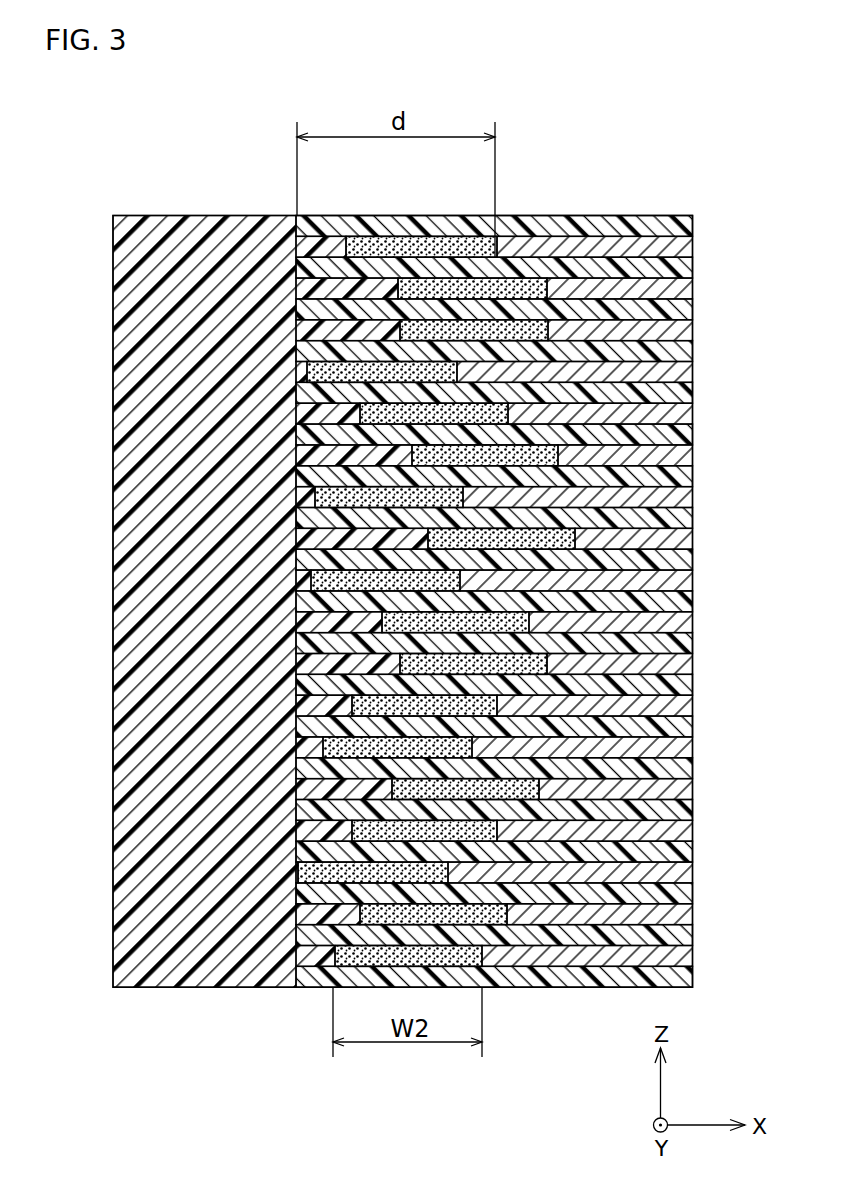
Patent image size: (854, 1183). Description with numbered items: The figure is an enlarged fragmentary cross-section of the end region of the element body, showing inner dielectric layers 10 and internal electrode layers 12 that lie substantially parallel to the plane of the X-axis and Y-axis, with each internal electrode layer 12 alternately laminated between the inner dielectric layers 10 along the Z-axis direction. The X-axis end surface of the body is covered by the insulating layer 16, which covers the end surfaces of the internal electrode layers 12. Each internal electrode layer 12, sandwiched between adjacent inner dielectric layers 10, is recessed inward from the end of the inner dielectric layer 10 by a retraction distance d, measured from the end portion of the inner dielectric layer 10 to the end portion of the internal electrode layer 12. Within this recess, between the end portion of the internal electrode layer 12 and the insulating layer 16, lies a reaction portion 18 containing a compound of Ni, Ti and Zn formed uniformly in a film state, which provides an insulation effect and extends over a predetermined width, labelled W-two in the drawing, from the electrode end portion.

The inner dielectric layer 10 is at (626, 268).
The internal electrode layer 12 is at (549, 282).
The insulating layer 16 is at (203, 266).
The reaction portion 18 is at (404, 242).